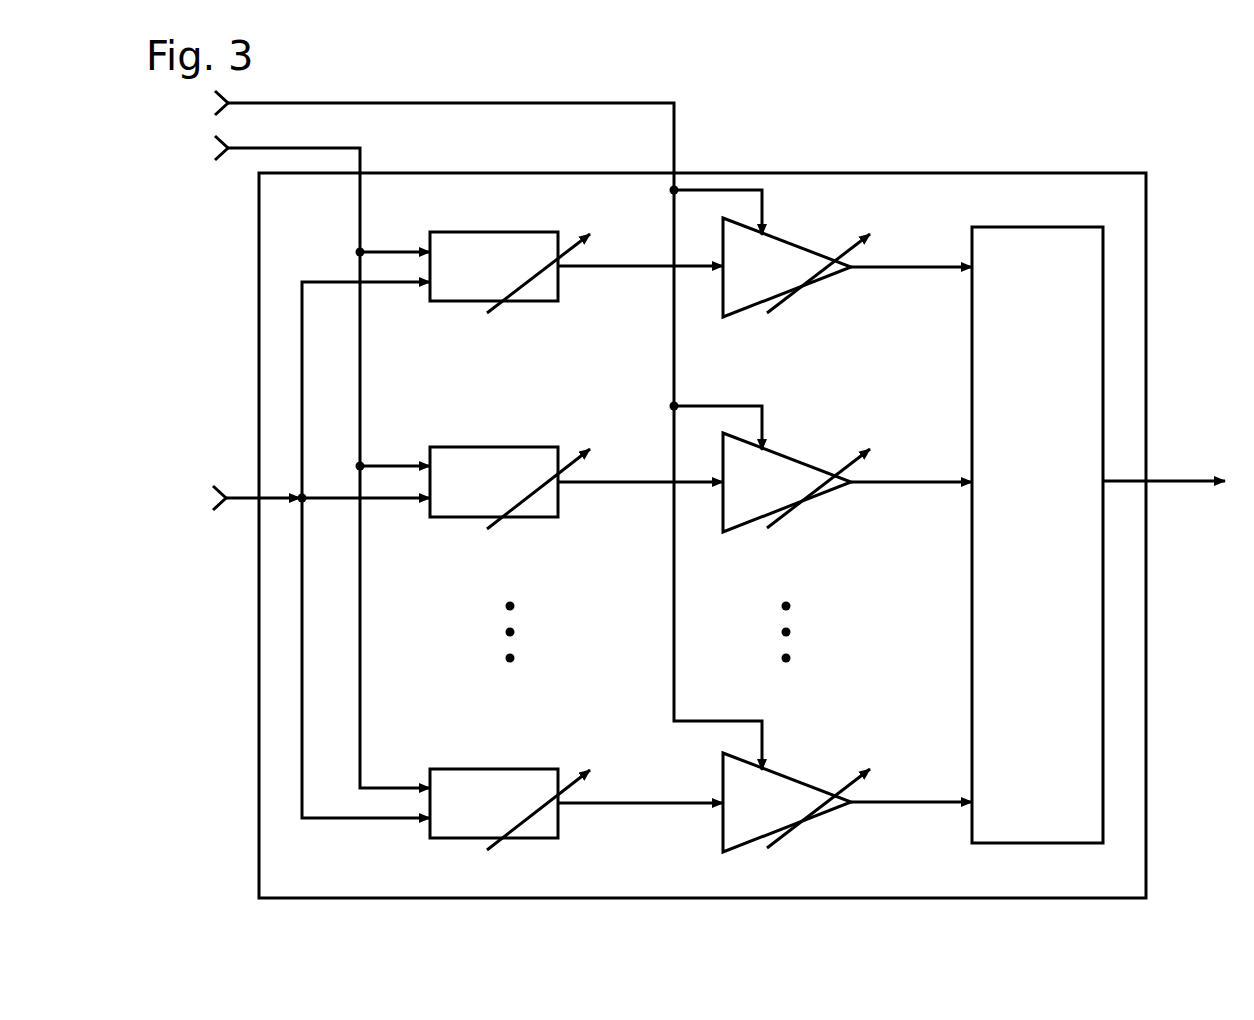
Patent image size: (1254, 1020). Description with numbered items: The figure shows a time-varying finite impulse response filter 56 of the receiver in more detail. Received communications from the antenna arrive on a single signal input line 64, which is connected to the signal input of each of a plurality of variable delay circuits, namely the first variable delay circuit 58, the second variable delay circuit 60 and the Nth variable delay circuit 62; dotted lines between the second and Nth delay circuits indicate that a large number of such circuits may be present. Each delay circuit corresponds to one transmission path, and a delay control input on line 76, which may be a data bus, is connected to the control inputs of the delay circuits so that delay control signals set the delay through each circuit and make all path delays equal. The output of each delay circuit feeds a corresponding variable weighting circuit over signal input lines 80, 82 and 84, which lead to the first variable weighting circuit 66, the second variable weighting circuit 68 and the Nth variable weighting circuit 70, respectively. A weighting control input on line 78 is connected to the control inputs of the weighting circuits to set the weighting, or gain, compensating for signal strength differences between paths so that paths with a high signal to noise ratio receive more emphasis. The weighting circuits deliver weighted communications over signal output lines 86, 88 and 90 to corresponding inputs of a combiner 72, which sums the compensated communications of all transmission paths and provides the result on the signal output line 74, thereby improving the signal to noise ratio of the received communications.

The time-varying finite impulse response (FIR) filter 56 is at (1190, 206).
The variable delay circuit T1 58 is at (510, 272).
The variable delay circuit T2 60 is at (510, 488).
The variable delay circuit TN 62 is at (510, 809).
The signal input line 64 is at (241, 500).
The variable weighting circuit W1 66 is at (796, 267).
The variable weighting circuit W2 68 is at (796, 482).
The variable weighting circuit WN 70 is at (796, 802).
The combiner 72 is at (1037, 535).
The signal output line 74 is at (1169, 481).
The delay control input line 76 is at (361, 165).
The weighting control input line 78 is at (675, 132).
The signal input line of weighting circuit W1 80 is at (637, 268).
The signal input line of weighting circuit W2 82 is at (637, 484).
The signal input line of weighting circuit WN 84 is at (636, 805).
The signal output line of weighting circuit W1 86 is at (922, 269).
The signal output line of weighting circuit W2 88 is at (922, 484).
The signal output line of weighting circuit WN 90 is at (920, 804).